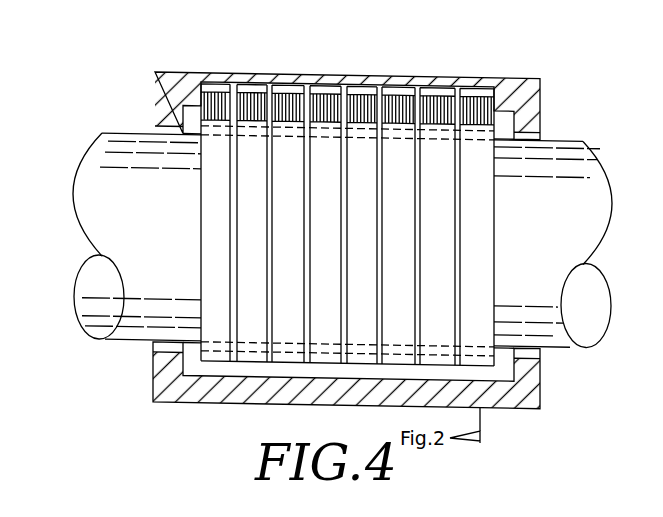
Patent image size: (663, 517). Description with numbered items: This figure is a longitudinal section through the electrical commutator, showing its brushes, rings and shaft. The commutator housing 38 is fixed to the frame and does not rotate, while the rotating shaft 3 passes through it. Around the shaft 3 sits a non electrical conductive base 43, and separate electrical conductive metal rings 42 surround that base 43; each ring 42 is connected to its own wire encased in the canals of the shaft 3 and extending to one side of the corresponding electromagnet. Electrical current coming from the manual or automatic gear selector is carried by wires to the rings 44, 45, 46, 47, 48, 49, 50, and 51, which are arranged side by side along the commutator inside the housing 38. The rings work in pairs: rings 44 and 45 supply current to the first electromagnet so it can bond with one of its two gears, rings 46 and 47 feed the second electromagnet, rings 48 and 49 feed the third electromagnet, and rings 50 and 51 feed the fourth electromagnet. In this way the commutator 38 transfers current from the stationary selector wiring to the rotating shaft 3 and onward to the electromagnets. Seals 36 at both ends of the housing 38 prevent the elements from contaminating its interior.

The rotating shaft 3 is at (73, 158).
The seals 36 is at (546, 128).
The commutator housing 38 is at (543, 374).
The electrical conductive metal rings 42 is at (487, 308).
The non electrical conductive base 43 is at (268, 168).
The ring 44 is at (213, 86).
The ring 45 is at (248, 86).
The ring 46 is at (283, 86).
The ring 47 is at (322, 86).
The ring 48 is at (358, 86).
The ring 49 is at (397, 86).
The ring 50 is at (438, 86).
The ring 51 is at (478, 86).